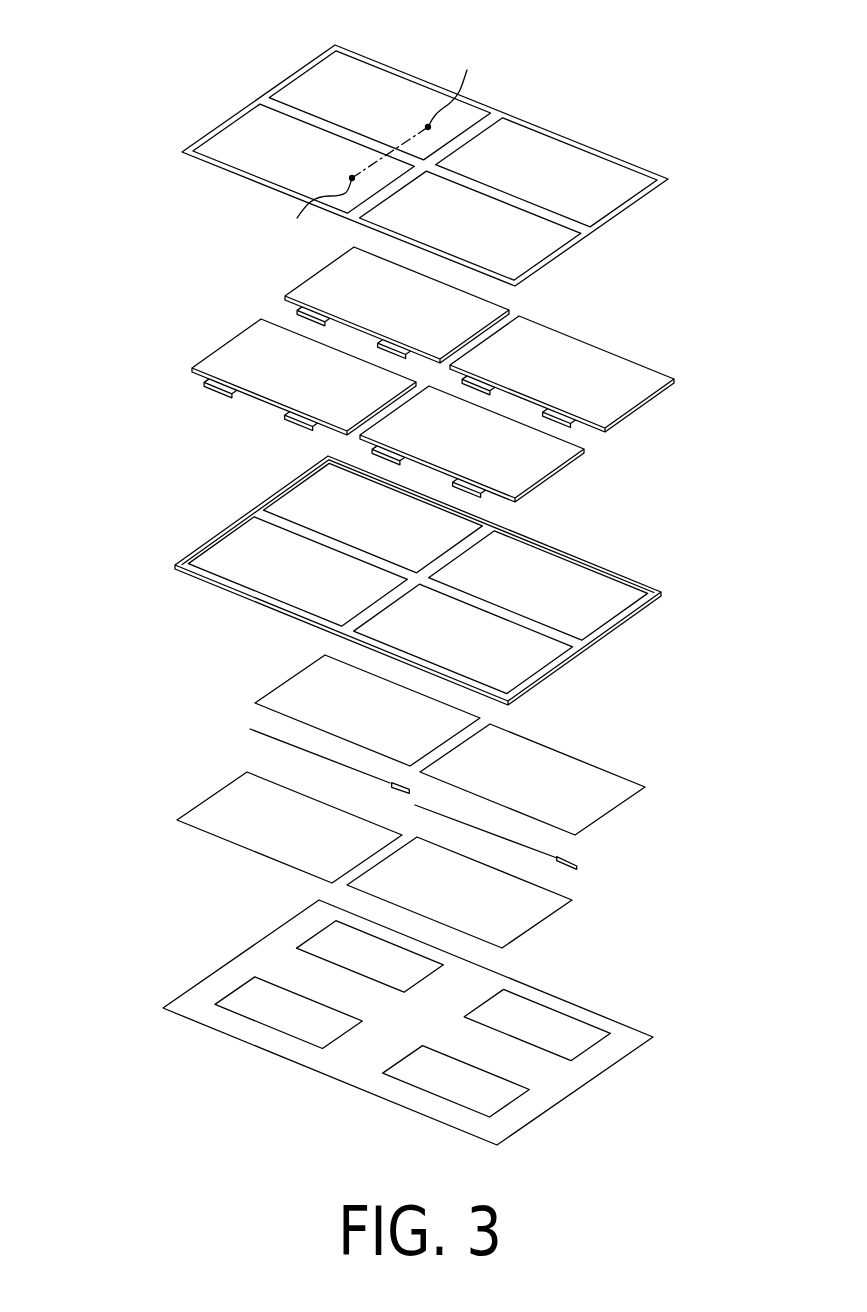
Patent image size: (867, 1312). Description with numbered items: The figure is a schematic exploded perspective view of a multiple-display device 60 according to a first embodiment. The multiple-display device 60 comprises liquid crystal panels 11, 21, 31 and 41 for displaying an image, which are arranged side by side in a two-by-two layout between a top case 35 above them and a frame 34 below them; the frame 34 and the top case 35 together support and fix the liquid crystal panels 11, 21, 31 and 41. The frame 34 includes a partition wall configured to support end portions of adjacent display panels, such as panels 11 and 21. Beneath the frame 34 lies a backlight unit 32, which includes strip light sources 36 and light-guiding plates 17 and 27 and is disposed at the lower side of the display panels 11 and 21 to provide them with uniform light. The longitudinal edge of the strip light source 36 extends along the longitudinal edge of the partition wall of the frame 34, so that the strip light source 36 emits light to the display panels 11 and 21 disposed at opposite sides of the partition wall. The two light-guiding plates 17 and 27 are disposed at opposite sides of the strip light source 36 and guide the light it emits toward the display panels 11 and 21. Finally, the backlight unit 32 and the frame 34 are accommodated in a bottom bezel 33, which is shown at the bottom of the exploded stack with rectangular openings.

The multiple-display device 60 is at (790, 55).
The top case 35 is at (182, 153).
The liquid crystal panel 21 is at (425, 322).
The liquid crystal panel 11 is at (313, 387).
The liquid crystal panel 31 is at (588, 387).
The liquid crystal panel 41 is at (488, 453).
The frame 34 is at (177, 567).
The backlight unit 32 is at (426, 800).
The light-guiding plate 27 is at (280, 687).
The light-guiding plate 17 is at (195, 810).
The strip light source 36 is at (260, 737).
The bottom bezel 33 is at (188, 990).